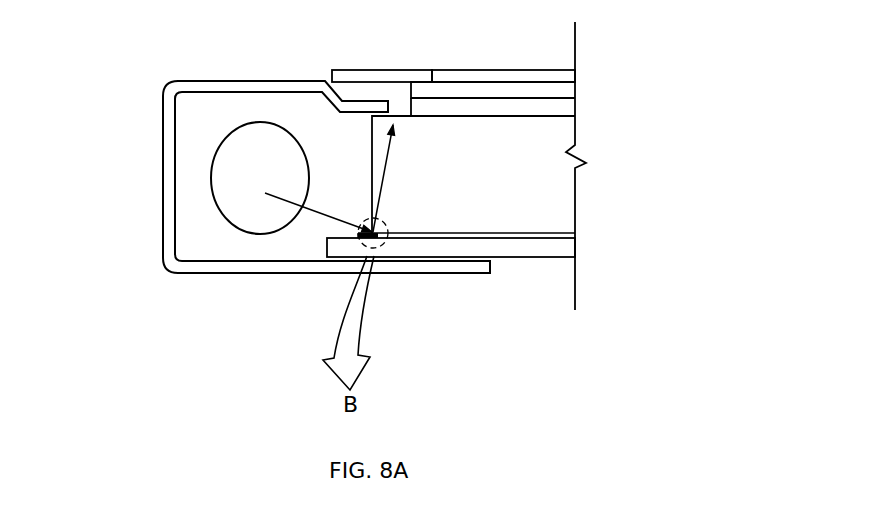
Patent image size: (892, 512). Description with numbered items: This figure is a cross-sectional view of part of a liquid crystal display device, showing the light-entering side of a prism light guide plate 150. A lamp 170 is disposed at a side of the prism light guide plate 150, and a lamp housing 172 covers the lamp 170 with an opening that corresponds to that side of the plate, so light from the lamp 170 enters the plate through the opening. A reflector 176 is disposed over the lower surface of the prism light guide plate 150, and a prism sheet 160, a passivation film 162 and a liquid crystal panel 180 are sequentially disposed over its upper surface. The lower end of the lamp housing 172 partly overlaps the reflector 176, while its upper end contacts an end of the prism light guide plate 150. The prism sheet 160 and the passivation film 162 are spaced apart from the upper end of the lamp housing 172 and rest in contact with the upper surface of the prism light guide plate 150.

The prism light guide plate 150 is at (550, 195).
The prism sheet 160 is at (560, 107).
The passivation film 162 is at (557, 85).
The lamp 170 is at (243, 197).
The lamp housing 172 is at (167, 148).
The reflector 176 is at (557, 245).
The liquid crystal panel 180 is at (476, 77).